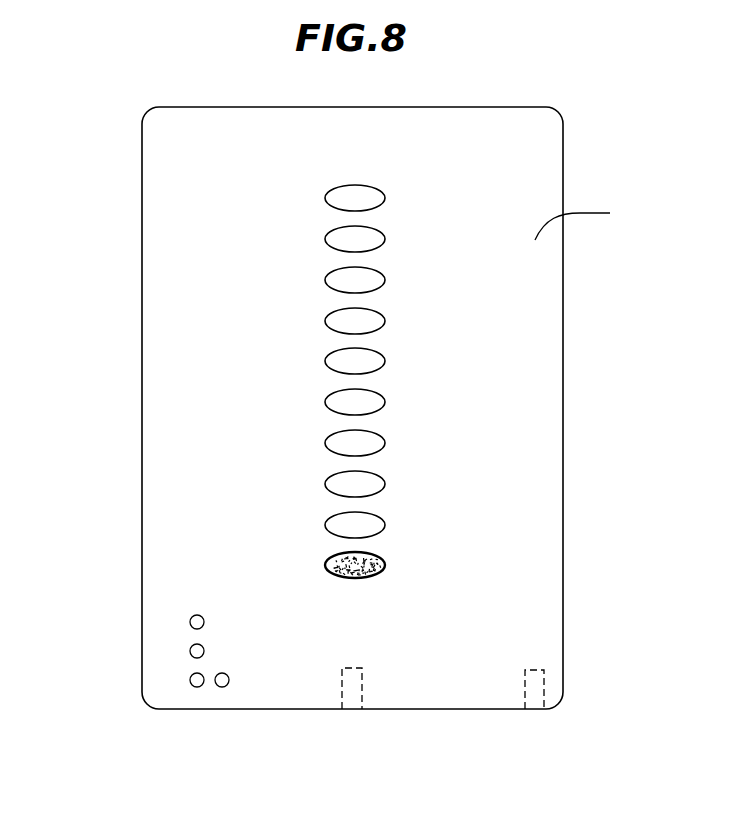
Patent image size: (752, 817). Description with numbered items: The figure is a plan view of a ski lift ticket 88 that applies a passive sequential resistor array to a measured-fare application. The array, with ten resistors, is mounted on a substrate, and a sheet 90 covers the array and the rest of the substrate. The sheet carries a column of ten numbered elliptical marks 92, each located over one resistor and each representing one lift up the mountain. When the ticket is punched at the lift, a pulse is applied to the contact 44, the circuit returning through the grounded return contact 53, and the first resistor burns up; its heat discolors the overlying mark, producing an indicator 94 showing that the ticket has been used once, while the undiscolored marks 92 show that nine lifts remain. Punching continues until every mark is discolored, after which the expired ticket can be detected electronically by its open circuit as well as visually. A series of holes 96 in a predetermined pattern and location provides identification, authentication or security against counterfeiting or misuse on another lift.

The ski lift ticket 88 is at (334, 385).
The sheet 90 is at (592, 219).
The numbered elliptical marks 92 is at (385, 401).
The indicator 94 is at (385, 564).
The holes 96 is at (166, 667).
The contact 44 is at (347, 710).
The return contact 53 is at (536, 710).